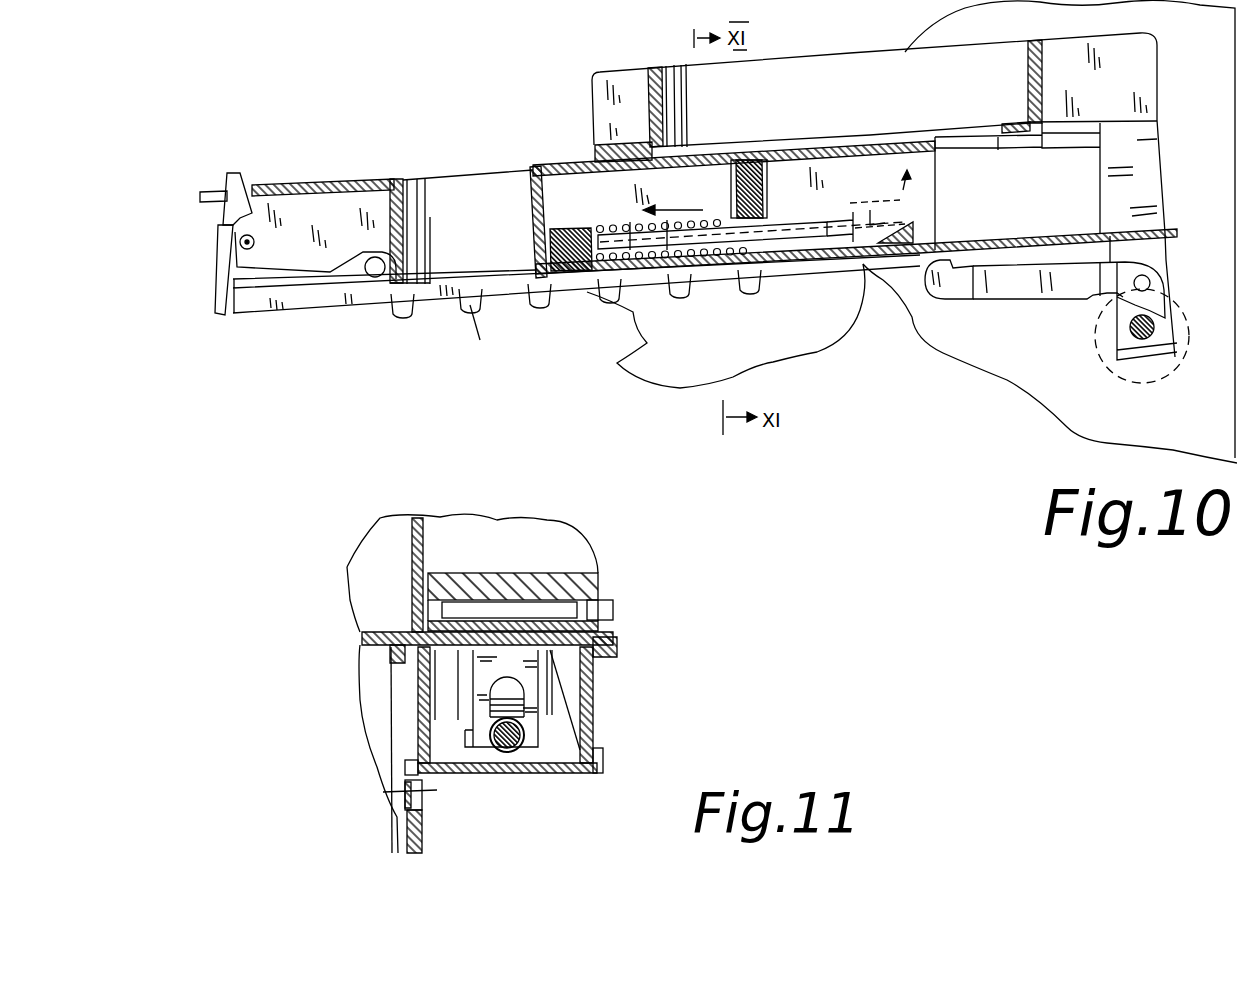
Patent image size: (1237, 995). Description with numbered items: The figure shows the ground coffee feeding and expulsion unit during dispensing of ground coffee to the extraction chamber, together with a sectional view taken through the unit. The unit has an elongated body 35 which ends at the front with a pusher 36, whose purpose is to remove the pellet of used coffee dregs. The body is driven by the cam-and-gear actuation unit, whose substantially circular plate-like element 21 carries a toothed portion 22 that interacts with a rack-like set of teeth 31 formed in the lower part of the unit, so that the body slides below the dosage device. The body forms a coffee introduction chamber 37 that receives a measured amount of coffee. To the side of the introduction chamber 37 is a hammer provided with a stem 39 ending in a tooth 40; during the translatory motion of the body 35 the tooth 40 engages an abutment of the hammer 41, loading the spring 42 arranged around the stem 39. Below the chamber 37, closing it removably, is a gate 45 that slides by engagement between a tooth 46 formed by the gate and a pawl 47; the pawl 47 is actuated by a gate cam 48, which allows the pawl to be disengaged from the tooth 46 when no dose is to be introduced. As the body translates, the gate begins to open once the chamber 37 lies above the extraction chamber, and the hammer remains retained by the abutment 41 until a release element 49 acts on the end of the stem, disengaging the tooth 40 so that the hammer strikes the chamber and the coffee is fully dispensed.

In FIG. 10, the plate-like element 21 is at (790, 340).
In FIG. 11, the plate-like element 21 is at (415, 815).
In FIG. 10, the toothed portion 22 is at (705, 298).
In FIG. 11, the toothed portion 22 is at (423, 800).
In FIG. 10, the rack-like set of teeth 31 is at (547, 310).
In FIG. 11, the rack-like set of teeth 31 is at (383, 792).
In FIG. 10, the elongated body 35 is at (788, 138).
In FIG. 11, the elongated body 35 is at (630, 702).
In FIG. 10, the pusher 36 is at (220, 258).
In FIG. 10, the coffee introduction chamber 37 is at (455, 193).
In FIG. 10, the stem 39 is at (689, 237).
In FIG. 11, the stem 39 is at (523, 750).
In FIG. 10, the tooth 40 is at (812, 233).
In FIG. 10, the abutment of the hammer 41 is at (863, 240).
In FIG. 10, the spring 42 is at (600, 227).
In FIG. 11, the spring 42 is at (418, 725).
In FIG. 10, the gate 45 is at (582, 293).
In FIG. 11, the gate 45 is at (503, 774).
In FIG. 10, the tooth 46 is at (973, 290).
In FIG. 10, the pawl 47 is at (1040, 292).
In FIG. 10, the gate cam 48 is at (1130, 347).
In FIG. 10, the release element 49 is at (907, 233).